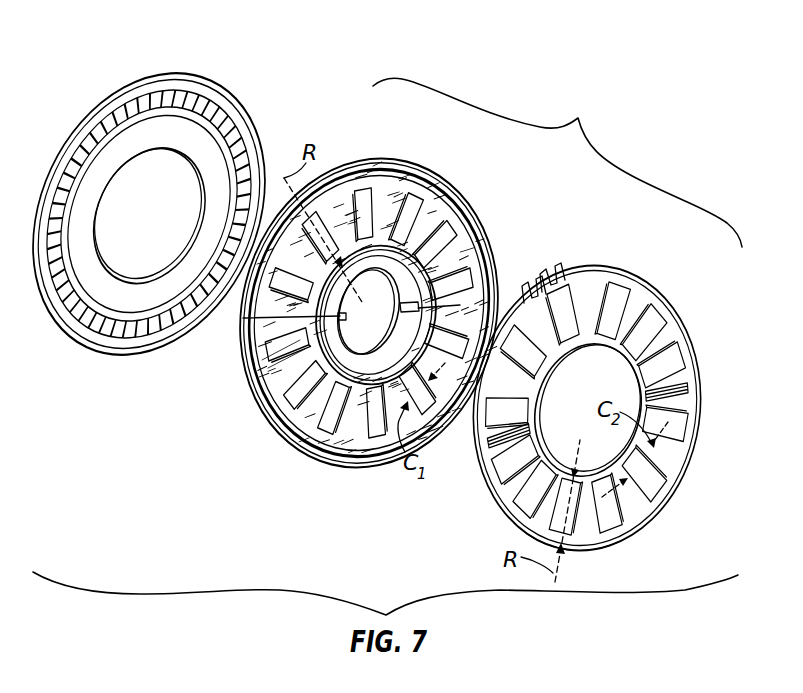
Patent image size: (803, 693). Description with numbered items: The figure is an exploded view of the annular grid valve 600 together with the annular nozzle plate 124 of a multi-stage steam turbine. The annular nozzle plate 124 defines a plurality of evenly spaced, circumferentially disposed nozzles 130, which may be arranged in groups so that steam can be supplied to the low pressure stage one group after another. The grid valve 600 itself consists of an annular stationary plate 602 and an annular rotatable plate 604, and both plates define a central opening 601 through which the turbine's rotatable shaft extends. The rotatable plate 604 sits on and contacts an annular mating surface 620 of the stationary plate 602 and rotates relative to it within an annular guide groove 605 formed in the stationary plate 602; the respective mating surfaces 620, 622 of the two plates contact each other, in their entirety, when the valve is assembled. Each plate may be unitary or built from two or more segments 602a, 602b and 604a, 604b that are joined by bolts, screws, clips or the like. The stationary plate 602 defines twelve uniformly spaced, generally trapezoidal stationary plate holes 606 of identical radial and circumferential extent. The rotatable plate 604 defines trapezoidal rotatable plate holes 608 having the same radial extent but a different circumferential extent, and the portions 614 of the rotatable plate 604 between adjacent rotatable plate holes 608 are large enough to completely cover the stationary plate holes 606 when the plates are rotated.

The annular nozzle plate 124 is at (181, 77).
The nozzles 130 is at (97, 131).
The annular grid valve 600 is at (578, 118).
The opening 601 is at (385, 333).
The annular stationary plate 602 is at (487, 235).
The segment of annular stationary plate 602a is at (362, 168).
The segment of annular stationary plate 602b is at (345, 467).
The annular guide groove 605 is at (277, 386).
The stationary plate holes 606 is at (410, 190).
The annular mating surface 620 is at (268, 394).
The annular rotatable plate 604 is at (702, 352).
The segment of annular rotatable plate 604a is at (610, 267).
The segment of annular rotatable plate 604b is at (603, 543).
The portions of annular rotatable plate 614 is at (637, 300).
The rotatable plate holes 608 is at (670, 415).
The annular mating surface 622 is at (490, 508).